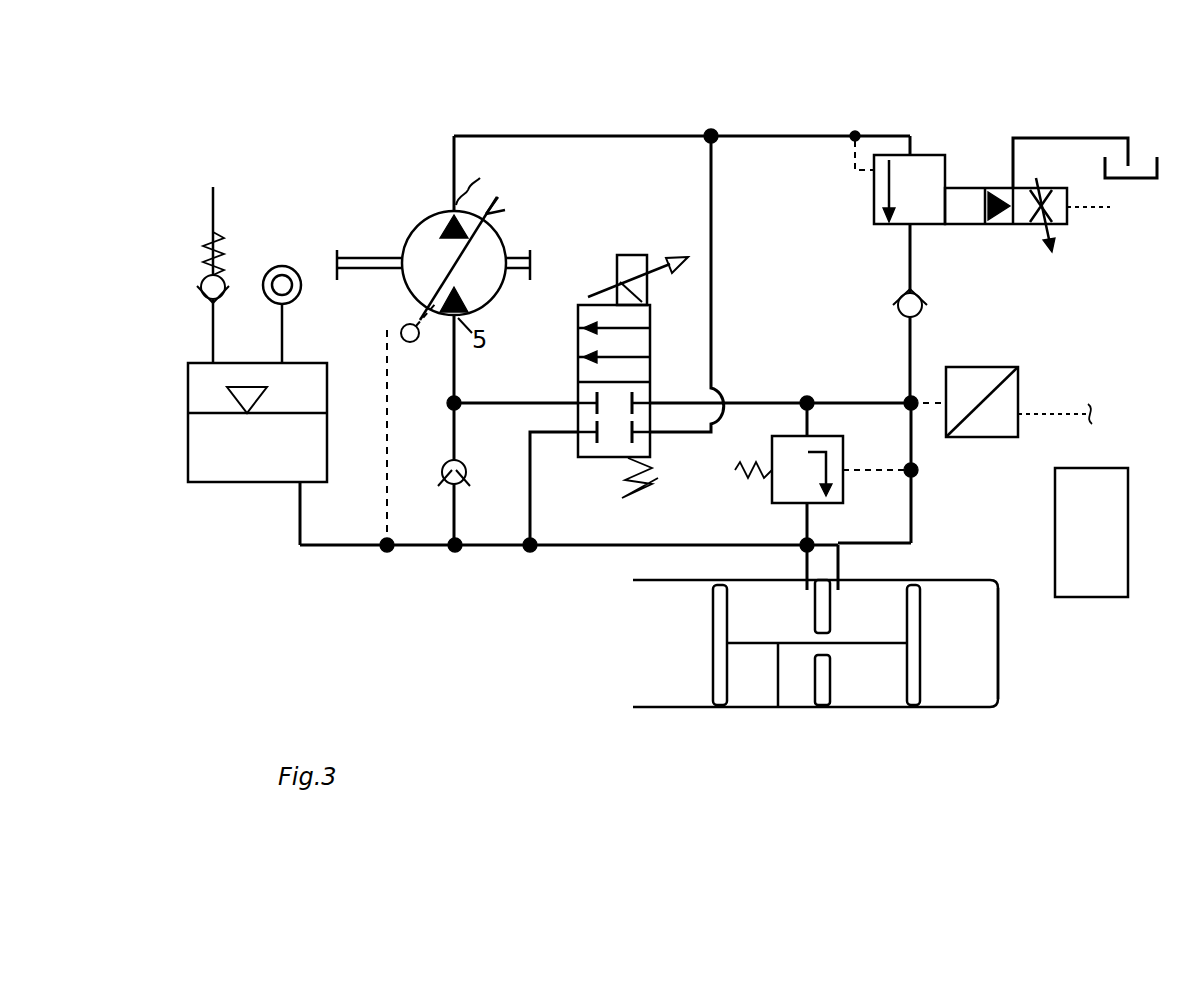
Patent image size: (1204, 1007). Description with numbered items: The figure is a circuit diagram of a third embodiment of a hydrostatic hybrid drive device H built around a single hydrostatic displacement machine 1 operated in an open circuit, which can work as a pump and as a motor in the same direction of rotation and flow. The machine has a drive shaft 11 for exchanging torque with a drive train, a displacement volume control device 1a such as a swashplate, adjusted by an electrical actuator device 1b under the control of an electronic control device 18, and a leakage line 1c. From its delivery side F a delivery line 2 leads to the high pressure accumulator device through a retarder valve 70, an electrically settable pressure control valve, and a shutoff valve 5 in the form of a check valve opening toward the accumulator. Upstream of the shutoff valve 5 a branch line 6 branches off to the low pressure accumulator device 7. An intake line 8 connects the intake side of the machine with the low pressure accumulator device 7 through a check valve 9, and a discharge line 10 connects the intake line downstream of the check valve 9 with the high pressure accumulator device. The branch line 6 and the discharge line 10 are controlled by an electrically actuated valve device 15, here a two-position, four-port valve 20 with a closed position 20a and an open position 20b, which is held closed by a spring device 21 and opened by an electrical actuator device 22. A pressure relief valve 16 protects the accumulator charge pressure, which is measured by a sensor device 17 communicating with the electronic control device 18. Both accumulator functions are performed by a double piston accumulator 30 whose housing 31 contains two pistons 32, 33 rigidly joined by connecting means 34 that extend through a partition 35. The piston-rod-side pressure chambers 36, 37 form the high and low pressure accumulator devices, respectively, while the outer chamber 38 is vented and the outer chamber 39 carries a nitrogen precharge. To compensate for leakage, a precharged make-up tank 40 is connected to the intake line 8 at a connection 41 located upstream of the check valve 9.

The hybrid drive device H is at (322, 182).
The hydrostatic displacement machine 1 is at (418, 253).
The displacement volume control device 1a is at (485, 245).
The electrical actuator device 1b is at (394, 326).
The leakage line 1c is at (386, 452).
The delivery side F is at (475, 176).
The delivery line 2 is at (783, 134).
The shutoff valve 5 is at (906, 311).
The branch line 6 is at (713, 180).
The low pressure accumulator device 7 is at (748, 695).
The intake line 8 is at (449, 431).
The shutoff valve 9 is at (444, 502).
The discharge line 10 is at (742, 400).
The drive shaft 11 is at (360, 263).
The valve device 15 is at (565, 458).
The pressure relief valve 16 is at (782, 493).
The sensor device 17 is at (1006, 396).
The electronic control device 18 is at (1106, 496).
The two-position, four-port valve 20 is at (581, 383).
The closed position 20a is at (603, 458).
The open position 20b is at (588, 341).
The spring device 21 is at (660, 478).
The electrical actuator device 22 is at (631, 255).
The double piston accumulator 30 is at (884, 704).
The housing 31 is at (989, 708).
The piston 32 is at (718, 688).
The piston 33 is at (913, 693).
The connecting means 34 is at (778, 648).
The partition 35 is at (823, 703).
The pressure chamber 36 is at (886, 628).
The pressure chamber 37 is at (778, 628).
The pressure chamber 38 is at (672, 646).
The pressure chamber 39 is at (978, 688).
The make-up tank 40 is at (188, 450).
The connection 41 is at (455, 556).
The retarder valve 70 is at (916, 180).